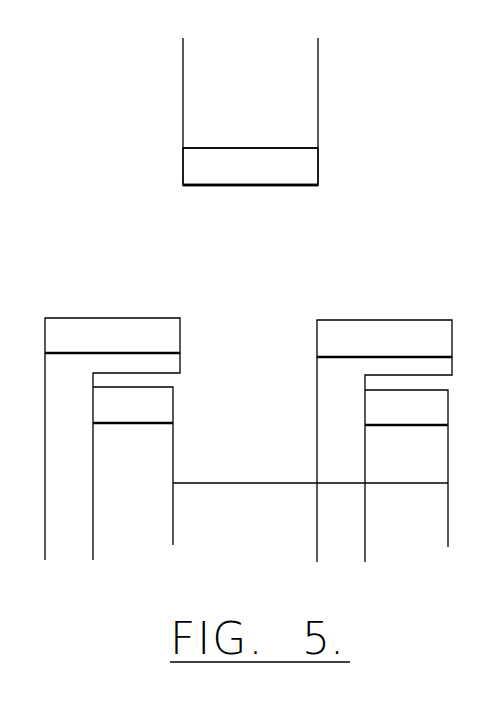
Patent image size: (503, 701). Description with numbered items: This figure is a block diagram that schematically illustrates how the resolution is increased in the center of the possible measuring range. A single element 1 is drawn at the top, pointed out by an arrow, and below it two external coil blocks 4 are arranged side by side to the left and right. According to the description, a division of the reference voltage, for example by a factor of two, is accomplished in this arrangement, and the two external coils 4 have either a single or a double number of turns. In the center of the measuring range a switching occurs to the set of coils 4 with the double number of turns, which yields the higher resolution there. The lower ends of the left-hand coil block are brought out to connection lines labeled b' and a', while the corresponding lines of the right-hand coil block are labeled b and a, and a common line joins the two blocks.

The semiconductor device structure 1 is at (398, 138).
The coil 4 is at (222, 148).
The terminal a is at (403, 476).
The terminal b is at (312, 476).
The terminal a prime a' is at (133, 472).
The terminal b prime b' is at (45, 472).